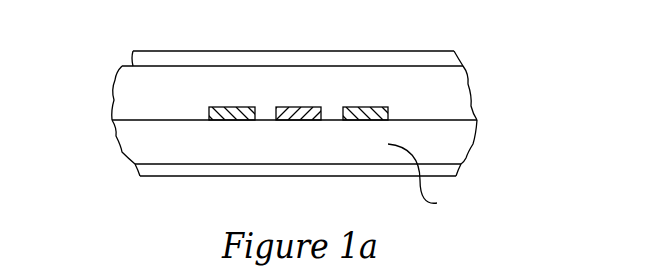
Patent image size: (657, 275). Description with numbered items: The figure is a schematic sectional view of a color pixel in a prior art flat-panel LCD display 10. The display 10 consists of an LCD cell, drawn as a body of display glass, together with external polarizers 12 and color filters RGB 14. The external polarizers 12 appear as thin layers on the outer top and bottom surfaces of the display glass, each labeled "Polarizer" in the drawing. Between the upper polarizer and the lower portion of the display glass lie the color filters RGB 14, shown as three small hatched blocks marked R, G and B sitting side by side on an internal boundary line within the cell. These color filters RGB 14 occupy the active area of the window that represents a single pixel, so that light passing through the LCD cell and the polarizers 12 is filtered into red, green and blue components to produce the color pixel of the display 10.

The LCD display 10 is at (474, 41).
The external polarizers 12 is at (320, 55).
The color filters RGB 14 is at (207, 108).